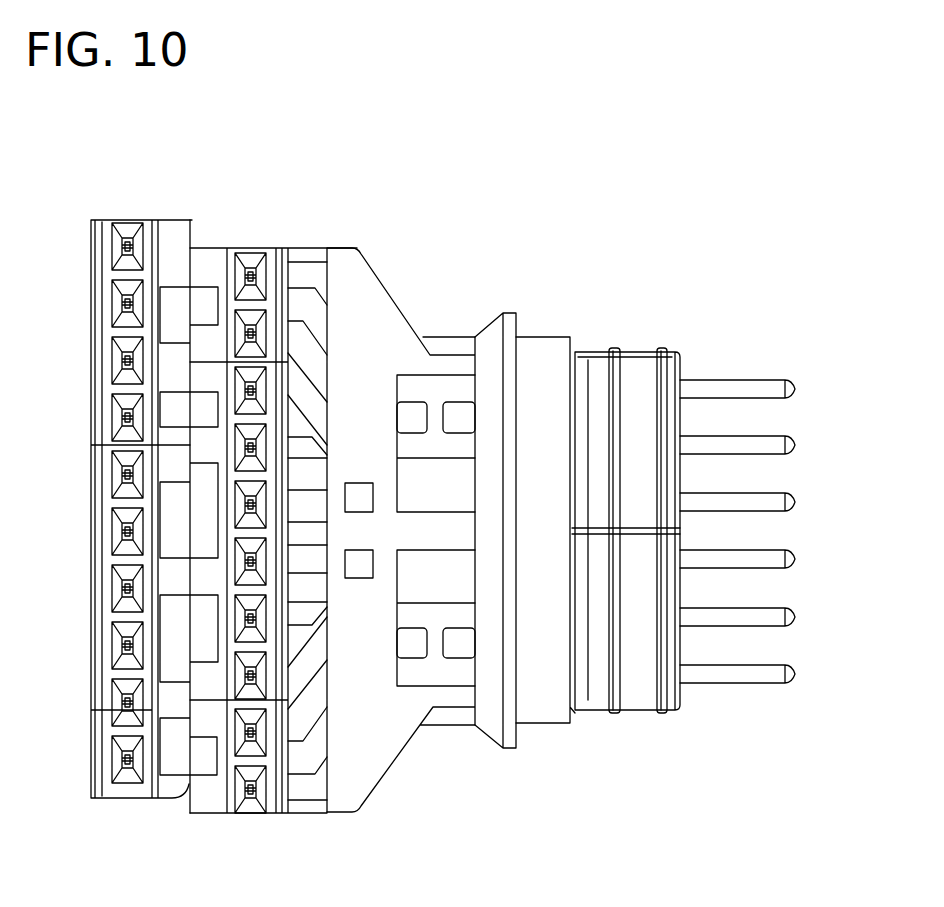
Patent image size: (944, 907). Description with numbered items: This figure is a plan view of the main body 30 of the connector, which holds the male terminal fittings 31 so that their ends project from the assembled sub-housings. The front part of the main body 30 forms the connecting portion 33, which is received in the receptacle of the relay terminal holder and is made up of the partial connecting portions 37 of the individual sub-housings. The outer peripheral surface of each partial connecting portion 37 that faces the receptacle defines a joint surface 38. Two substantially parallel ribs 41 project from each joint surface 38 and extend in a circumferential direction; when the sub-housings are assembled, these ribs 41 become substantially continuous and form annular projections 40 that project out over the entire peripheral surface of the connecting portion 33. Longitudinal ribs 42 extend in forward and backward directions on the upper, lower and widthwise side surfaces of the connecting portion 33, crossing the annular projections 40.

The main body 30 is at (480, 241).
The male terminal fitting 31 is at (265, 279).
The connecting portion 33 is at (640, 329).
The partial connecting portion 37 is at (640, 475).
The joint surface 38 is at (588, 697).
The annular projection 40 is at (613, 712).
The rib 41 is at (673, 598).
The longitudinal rib 42 is at (638, 528).